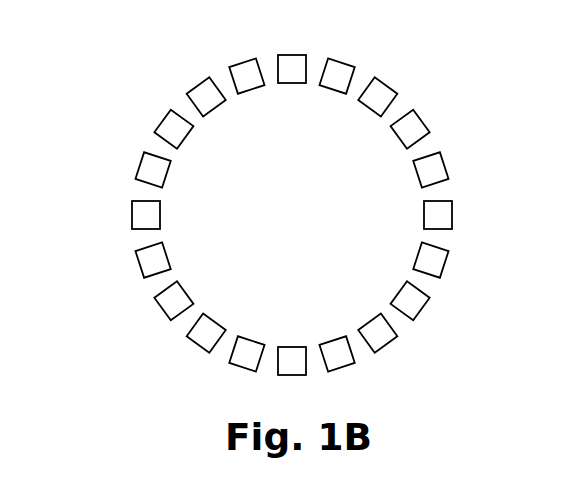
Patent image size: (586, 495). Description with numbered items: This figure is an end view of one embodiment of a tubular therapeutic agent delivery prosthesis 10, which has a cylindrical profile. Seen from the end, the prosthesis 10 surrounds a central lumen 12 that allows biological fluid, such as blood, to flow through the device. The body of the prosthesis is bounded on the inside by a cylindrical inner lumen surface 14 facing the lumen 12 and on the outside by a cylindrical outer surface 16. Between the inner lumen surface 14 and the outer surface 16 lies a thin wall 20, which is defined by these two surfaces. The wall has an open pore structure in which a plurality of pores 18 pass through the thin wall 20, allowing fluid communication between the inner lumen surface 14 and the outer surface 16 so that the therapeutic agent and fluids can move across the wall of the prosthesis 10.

The tubular therapeutic agent delivery prosthesis 10 is at (469, 96).
The lumen 12 is at (294, 233).
The cylindrical inner lumen surface 14 is at (333, 337).
The cylindrical outer surface 16 is at (158, 313).
The pores 18 is at (440, 238).
The thin wall 20 is at (150, 168).